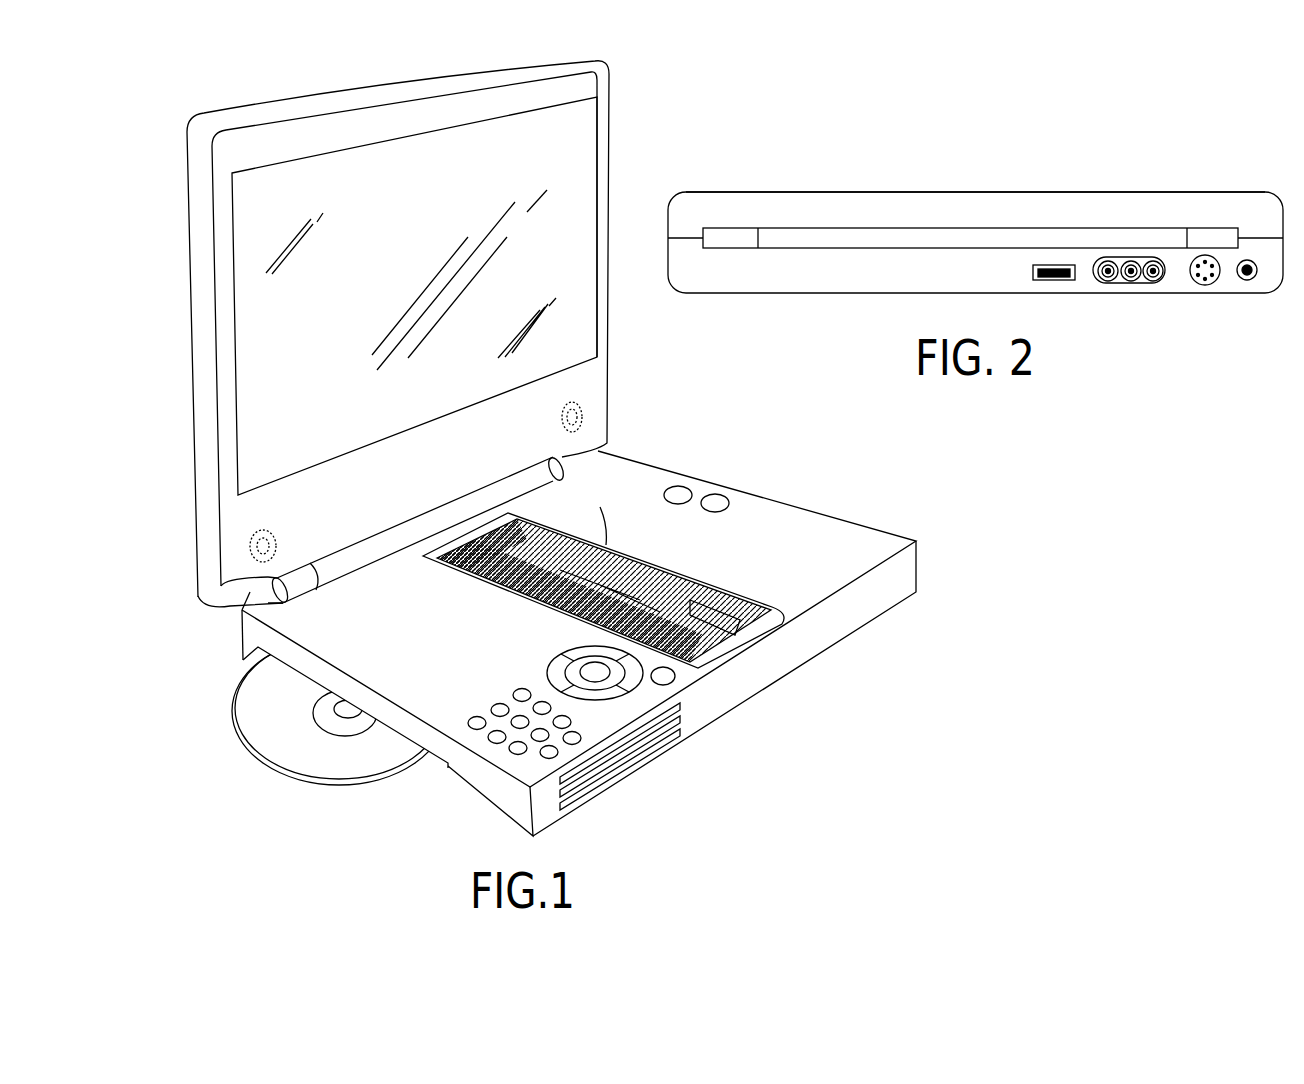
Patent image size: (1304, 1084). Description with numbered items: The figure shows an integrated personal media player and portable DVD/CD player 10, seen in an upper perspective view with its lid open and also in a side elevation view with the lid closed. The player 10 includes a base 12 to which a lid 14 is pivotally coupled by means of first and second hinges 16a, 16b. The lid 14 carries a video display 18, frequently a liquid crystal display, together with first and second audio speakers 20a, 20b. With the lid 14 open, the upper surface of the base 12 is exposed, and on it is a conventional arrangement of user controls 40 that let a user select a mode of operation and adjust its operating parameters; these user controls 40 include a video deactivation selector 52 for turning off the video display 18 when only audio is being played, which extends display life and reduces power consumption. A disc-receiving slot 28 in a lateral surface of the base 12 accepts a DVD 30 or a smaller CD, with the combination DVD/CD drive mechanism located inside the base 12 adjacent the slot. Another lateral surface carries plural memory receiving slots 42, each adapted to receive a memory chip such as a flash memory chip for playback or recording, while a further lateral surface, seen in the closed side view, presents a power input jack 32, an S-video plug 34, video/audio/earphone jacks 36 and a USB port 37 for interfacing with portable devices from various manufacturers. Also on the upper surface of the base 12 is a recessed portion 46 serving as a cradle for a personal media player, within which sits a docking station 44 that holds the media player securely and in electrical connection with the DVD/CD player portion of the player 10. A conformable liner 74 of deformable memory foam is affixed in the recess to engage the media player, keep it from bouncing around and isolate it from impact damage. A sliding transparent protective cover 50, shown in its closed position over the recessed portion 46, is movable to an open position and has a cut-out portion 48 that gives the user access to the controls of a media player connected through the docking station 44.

In FIG. 1, the integrated PMP/DVD/CD player 10 is at (696, 449).
In FIG. 2, the integrated PMP/DVD/CD player 10 is at (980, 166).
In FIG. 2, the base 12 is at (830, 272).
In FIG. 1, the lid 14 is at (321, 136).
In FIG. 2, the lid 14 is at (857, 205).
In FIG. 1, the first hinge 16a is at (608, 437).
In FIG. 2, the first hinge 16a is at (735, 238).
In FIG. 1, the second hinge 16b is at (258, 583).
In FIG. 2, the second hinge 16b is at (1200, 238).
In FIG. 1, the video display 18 is at (242, 250).
In FIG. 1, the first audio speaker 20a is at (585, 402).
In FIG. 1, the second audio speaker 20b is at (257, 542).
In FIG. 1, the disc-receiving slot 28 is at (400, 737).
In FIG. 1, the DVD 30 is at (265, 738).
In FIG. 2, the power input jack 32 is at (1247, 285).
In FIG. 2, the S-video plug 34 is at (1212, 287).
In FIG. 2, the video/audio/earphone jacks 36 is at (1140, 282).
In FIG. 2, the USB port 37 is at (1060, 282).
In FIG. 1, the user controls 40 is at (496, 751).
In FIG. 1, the memory receiving slots 42 is at (617, 752).
In FIG. 1, the docking station 44 is at (700, 655).
In FIG. 1, the recessed portion 46 is at (787, 612).
In FIG. 1, the cut-out portion 48 is at (650, 560).
In FIG. 1, the sliding transparent protective cover 50 is at (692, 572).
In FIG. 1, the video deactivation selector 52 is at (668, 687).
In FIG. 1, the conformable liner 74 is at (730, 622).